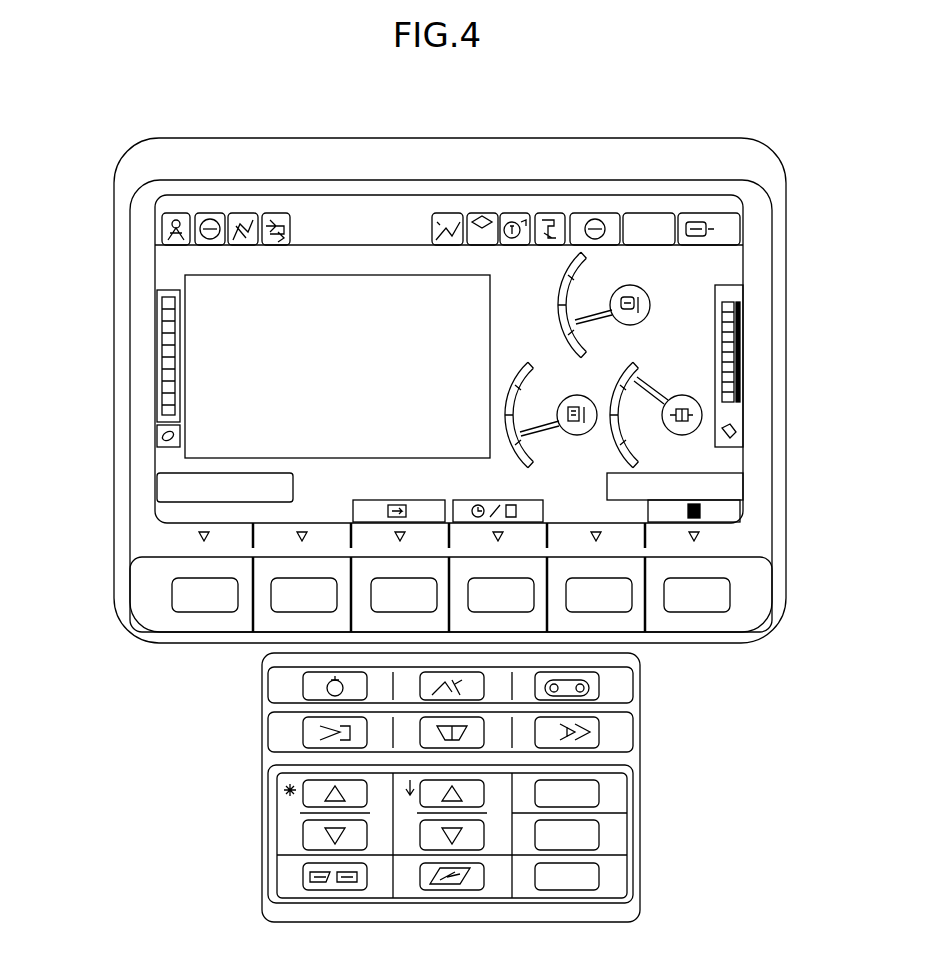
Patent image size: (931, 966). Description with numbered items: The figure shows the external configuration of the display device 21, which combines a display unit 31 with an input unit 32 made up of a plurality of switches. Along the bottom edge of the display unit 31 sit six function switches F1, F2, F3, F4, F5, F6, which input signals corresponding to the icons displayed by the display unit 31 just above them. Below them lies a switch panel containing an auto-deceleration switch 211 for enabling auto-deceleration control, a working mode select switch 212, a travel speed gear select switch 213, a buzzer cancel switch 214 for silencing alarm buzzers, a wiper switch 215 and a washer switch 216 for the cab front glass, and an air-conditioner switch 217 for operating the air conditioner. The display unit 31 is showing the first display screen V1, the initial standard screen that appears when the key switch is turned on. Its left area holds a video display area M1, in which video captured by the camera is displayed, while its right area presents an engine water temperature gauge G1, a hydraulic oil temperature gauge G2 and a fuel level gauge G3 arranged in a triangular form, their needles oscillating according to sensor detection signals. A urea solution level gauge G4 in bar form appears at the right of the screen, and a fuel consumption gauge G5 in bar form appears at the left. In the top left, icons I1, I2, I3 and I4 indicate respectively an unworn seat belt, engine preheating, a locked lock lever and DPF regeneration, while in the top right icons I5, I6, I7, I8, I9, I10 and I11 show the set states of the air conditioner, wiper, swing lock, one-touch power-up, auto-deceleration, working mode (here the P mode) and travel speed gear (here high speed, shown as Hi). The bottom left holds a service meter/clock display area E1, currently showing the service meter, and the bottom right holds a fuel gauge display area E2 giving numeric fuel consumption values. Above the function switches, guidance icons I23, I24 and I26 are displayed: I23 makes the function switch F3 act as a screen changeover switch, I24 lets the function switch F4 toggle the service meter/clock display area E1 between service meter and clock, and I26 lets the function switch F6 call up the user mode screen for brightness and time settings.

The display device 21 is at (658, 134).
The display unit 31 is at (754, 258).
The input unit 32 is at (793, 555).
The icon I1 is at (170, 213).
The icon I2 is at (210, 213).
The icon I3 is at (243, 213).
The icon I4 is at (282, 213).
The icon I5 is at (432, 215).
The icon I6 is at (462, 215).
The icon I7 is at (496, 215).
The icon I8 is at (533, 215).
The icon I9 is at (592, 215).
The icon I10 is at (648, 215).
The icon I11 is at (703, 215).
The video display area M1 is at (193, 275).
The engine water temperature gauge G1 is at (577, 280).
The hydraulic oil temperature gauge G2 is at (530, 387).
The fuel level gauge G3 is at (743, 370).
The urea solution level gauge G4 is at (657, 373).
The fuel consumption gauge G5 is at (157, 350).
The first display screen V1 is at (167, 457).
The service meter/clock display area E1 is at (160, 488).
The fuel gauge display area E2 is at (745, 482).
The guidance icon I23 is at (463, 500).
The guidance icon I24 is at (373, 507).
The guidance icon I26 is at (735, 511).
The function switch F1 is at (168, 600).
The function switch F2 is at (272, 622).
The function switch F3 is at (377, 622).
The function switch F4 is at (520, 622).
The function switch F5 is at (623, 620).
The function switch F6 is at (723, 620).
The auto-deceleration switch 211 is at (277, 695).
The working mode select switch 212 is at (417, 695).
The travel speed gear select switch 213 is at (633, 692).
The buzzer cancel switch 214 is at (280, 745).
The wiper switch 215 is at (437, 745).
The washer switch 216 is at (628, 735).
The air-conditioner switch 217 is at (642, 827).